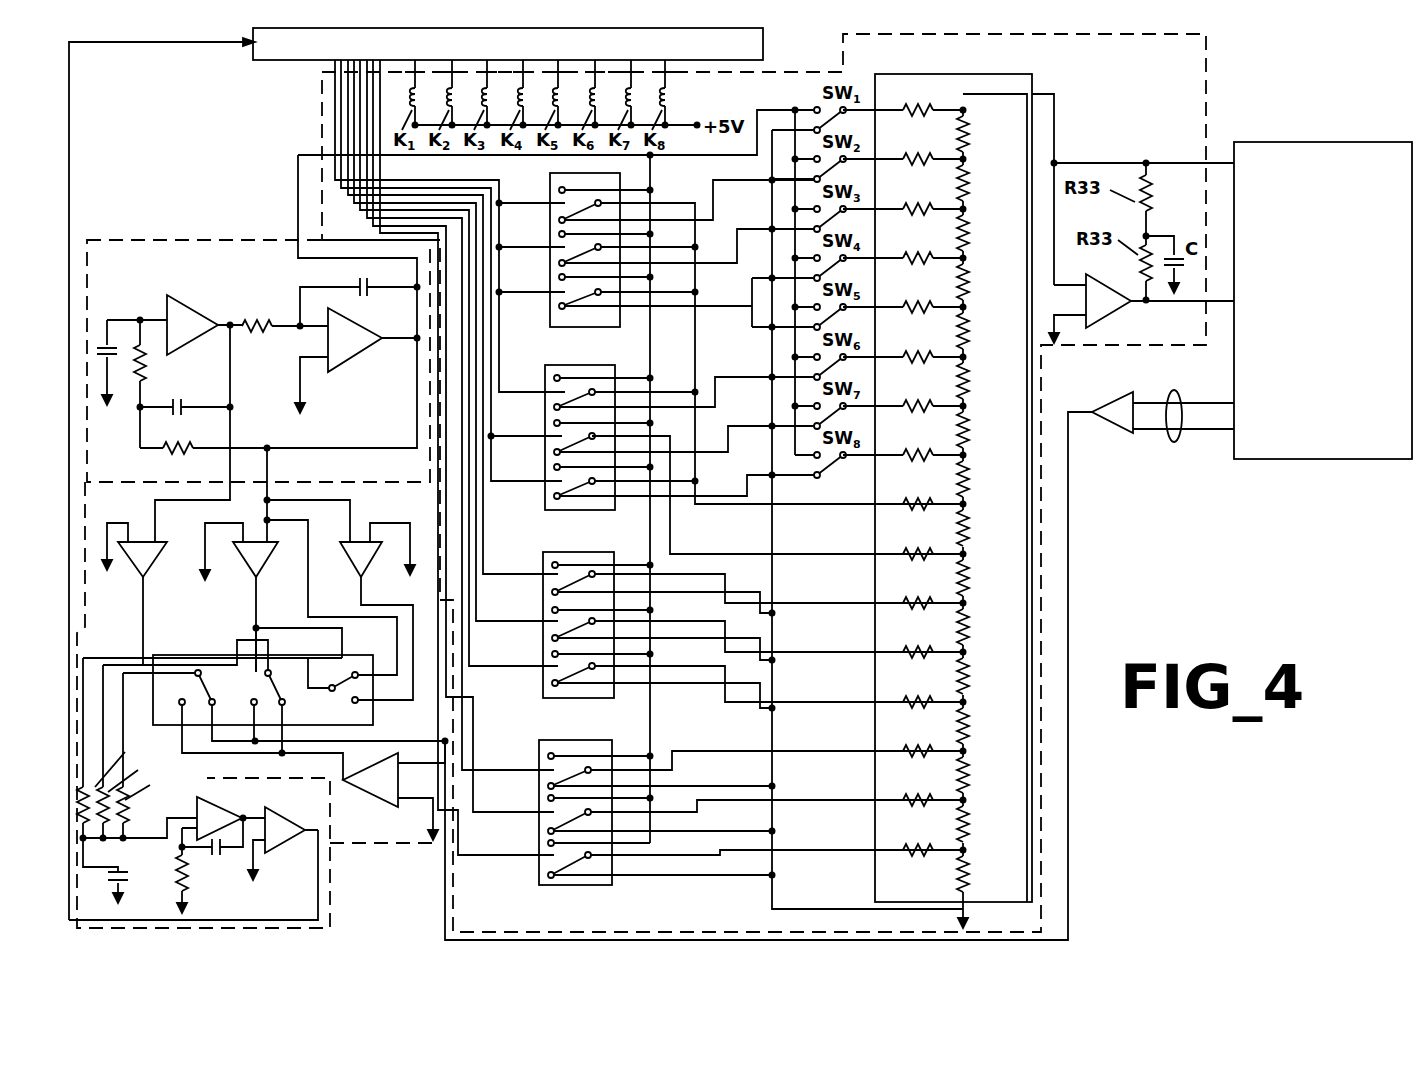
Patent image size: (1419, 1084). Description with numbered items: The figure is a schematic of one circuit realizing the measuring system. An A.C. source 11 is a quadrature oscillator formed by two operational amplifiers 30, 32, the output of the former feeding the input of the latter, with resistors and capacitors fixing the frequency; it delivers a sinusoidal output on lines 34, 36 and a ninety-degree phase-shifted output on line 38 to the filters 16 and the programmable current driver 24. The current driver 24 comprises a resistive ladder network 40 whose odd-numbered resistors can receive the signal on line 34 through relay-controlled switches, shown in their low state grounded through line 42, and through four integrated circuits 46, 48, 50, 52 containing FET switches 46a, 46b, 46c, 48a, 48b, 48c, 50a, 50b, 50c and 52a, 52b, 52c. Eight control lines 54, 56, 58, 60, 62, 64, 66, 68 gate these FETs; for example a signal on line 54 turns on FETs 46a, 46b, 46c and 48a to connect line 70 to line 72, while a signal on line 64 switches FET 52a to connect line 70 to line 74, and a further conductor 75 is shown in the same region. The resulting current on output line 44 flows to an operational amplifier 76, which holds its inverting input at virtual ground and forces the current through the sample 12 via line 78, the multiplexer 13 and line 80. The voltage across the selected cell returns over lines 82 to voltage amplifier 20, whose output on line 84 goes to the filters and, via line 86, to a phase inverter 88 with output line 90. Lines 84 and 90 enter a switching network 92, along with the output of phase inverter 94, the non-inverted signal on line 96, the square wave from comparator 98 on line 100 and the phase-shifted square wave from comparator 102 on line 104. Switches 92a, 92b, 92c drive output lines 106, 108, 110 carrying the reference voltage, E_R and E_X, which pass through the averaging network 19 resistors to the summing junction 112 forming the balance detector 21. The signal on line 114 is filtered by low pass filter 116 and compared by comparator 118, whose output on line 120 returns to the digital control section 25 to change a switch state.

The A.C. source 11 is at (170, 238).
The sample 12 is at (1323, 274).
The multiplexer 13 is at (1318, 142).
The filter 16 is at (262, 687).
The averaging network 19 is at (203, 705).
The voltage amplifier 20 is at (1122, 440).
The balance detector 21 is at (227, 790).
The programmable current driver 24 is at (1185, 38).
The digital control section 25 is at (763, 48).
The operational amplifier 30 is at (173, 296).
The operational amplifier 32 is at (352, 360).
The line 34 is at (298, 205).
The line 36 is at (270, 470).
The line 38 is at (232, 468).
The resistive ladder network 40 is at (985, 75).
The line 42 is at (768, 210).
The output line 44 is at (1058, 118).
The integrated circuit 46 is at (655, 263).
The field effect transistor switch 46a is at (550, 200).
The field effect transistor switch 46b is at (557, 258).
The field effect transistor switch 46c is at (556, 297).
The integrated circuit 48 is at (651, 442).
The field effect transistor switch 48a is at (550, 382).
The field effect transistor switch 48b is at (552, 444).
The field effect transistor switch 48c is at (549, 485).
The integrated circuit 50 is at (716, 642).
The field effect transistor switch 50a is at (542, 575).
The field effect transistor switch 50b is at (540, 622).
The field effect transistor switch 50c is at (538, 668).
The integrated circuit 52 is at (716, 829).
The field effect transistor switch 52a is at (540, 768).
The field effect transistor switch 52b is at (537, 818).
The field effect transistor switch 52c is at (549, 855).
The line 54 is at (336, 91).
The line 56 is at (342, 107).
The line 58 is at (348, 121).
The line 60 is at (355, 135).
The line 62 is at (475, 666).
The line 64 is at (490, 720).
The line 66 is at (473, 810).
The line 68 is at (458, 855).
The line 70 is at (655, 165).
The line 72 is at (700, 208).
The line 74 is at (712, 750).
The conductor 75 is at (672, 537).
The operational amplifier 76 is at (1115, 310).
The line 78 is at (1190, 162).
The line 80 is at (1220, 340).
The lines 82 is at (1176, 442).
The line 84 is at (1065, 637).
The line 86 is at (421, 768).
The phase inverter 88 is at (412, 827).
The line 90 is at (394, 791).
The switching network 92 is at (284, 704).
The switch 92a is at (362, 652).
The switch 92b is at (250, 713).
The switch 92c is at (284, 725).
The phase inverter 94 is at (365, 573).
The line 96 is at (310, 590).
The comparator 98 is at (271, 573).
The line 100 is at (258, 600).
The comparator 102 is at (152, 578).
The line 104 is at (158, 592).
The output line 106 is at (247, 650).
The output line 108 is at (132, 670).
The output line 110 is at (100, 578).
The summing junction 112 is at (95, 885).
The line 114 is at (158, 850).
The low pass filter 116 is at (215, 863).
The comparator 118 is at (290, 850).
The line 120 is at (165, 42).